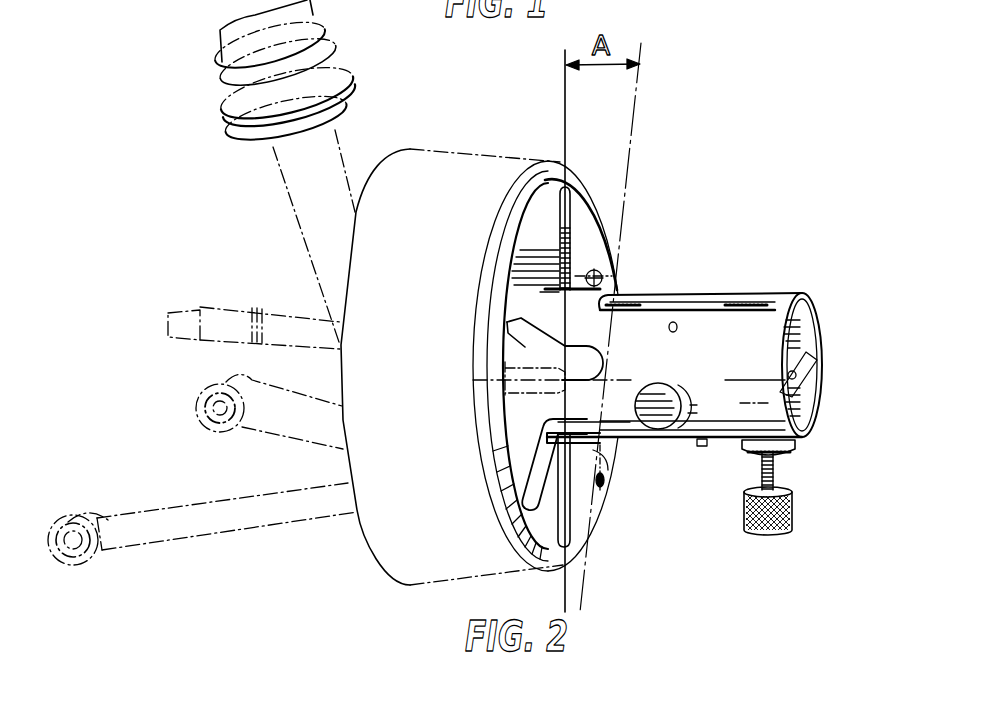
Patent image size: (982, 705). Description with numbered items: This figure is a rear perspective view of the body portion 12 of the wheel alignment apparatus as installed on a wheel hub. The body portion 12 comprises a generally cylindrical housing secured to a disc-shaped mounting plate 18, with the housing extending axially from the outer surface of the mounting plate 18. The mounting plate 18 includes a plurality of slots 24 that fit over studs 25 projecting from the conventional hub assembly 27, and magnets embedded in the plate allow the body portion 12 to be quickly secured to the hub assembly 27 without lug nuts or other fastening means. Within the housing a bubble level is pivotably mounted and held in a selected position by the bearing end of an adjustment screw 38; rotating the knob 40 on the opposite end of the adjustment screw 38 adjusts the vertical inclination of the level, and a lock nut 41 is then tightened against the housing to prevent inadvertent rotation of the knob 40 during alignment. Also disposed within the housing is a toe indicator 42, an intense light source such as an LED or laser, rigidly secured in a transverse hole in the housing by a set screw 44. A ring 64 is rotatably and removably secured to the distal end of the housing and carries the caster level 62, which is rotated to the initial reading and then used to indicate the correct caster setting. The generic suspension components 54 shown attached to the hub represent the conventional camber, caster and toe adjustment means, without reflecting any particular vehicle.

The body portion 12 is at (725, 353).
The mounting plate 18 is at (590, 217).
The slots 24 is at (508, 350).
The studs 25 is at (616, 285).
The hub assembly 27 is at (397, 247).
The adjustment screw 38 is at (778, 472).
The knob 40 is at (797, 516).
The lock nut 41 is at (798, 450).
The toe indicator 42 is at (655, 388).
The set screw 44 is at (701, 447).
The suspension components 54 is at (268, 540).
The caster level 62 is at (810, 380).
The ring 64 is at (808, 317).